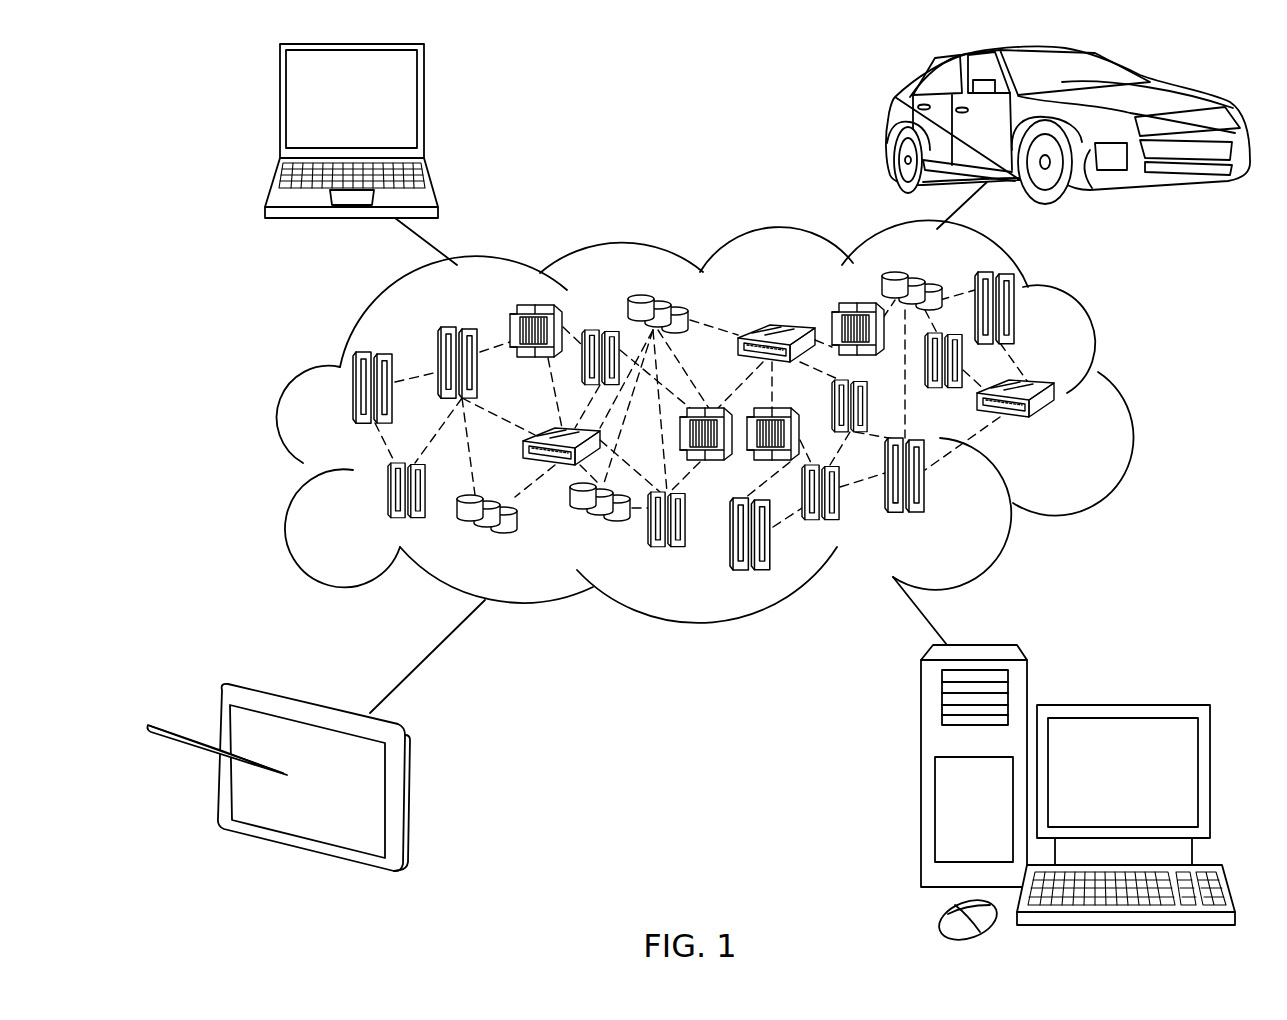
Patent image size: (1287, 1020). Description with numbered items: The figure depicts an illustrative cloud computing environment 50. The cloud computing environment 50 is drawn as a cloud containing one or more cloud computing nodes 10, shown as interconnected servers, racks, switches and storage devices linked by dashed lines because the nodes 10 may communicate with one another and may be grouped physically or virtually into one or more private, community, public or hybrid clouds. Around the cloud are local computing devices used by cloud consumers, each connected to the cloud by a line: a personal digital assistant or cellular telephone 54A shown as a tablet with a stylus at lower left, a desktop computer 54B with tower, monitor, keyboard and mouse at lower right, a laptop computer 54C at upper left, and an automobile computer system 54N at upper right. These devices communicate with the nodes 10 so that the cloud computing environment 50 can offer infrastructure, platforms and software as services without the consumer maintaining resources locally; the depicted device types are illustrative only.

The cloud computing node 10 is at (1058, 431).
The cloud computing environment 50 is at (1123, 401).
The personal digital assistant or cellular telephone 54A is at (412, 802).
The desktop computer 54B is at (1120, 705).
The laptop computer 54C is at (424, 108).
The automobile computer system 54N is at (890, 125).